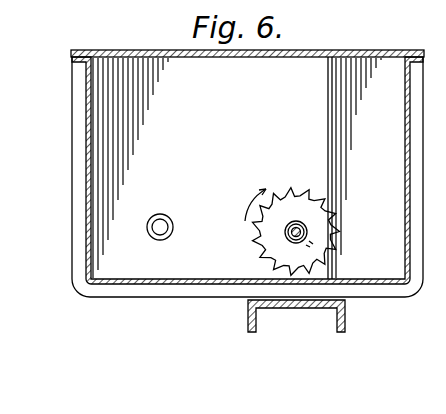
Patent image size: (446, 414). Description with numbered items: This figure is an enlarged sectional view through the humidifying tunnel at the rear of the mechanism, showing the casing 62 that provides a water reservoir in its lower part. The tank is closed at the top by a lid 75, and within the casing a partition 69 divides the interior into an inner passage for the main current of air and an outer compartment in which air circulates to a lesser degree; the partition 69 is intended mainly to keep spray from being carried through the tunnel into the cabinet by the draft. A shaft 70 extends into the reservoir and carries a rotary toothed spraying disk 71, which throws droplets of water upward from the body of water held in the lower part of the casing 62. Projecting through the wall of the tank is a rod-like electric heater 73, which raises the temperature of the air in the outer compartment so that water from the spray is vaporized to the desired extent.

The casing 62 is at (88, 251).
The partition 69 is at (326, 157).
The shaft 70 is at (286, 233).
The rotary toothed spraying disk 71 is at (284, 200).
The electric heater 73 is at (175, 218).
The lid 75 is at (366, 51).